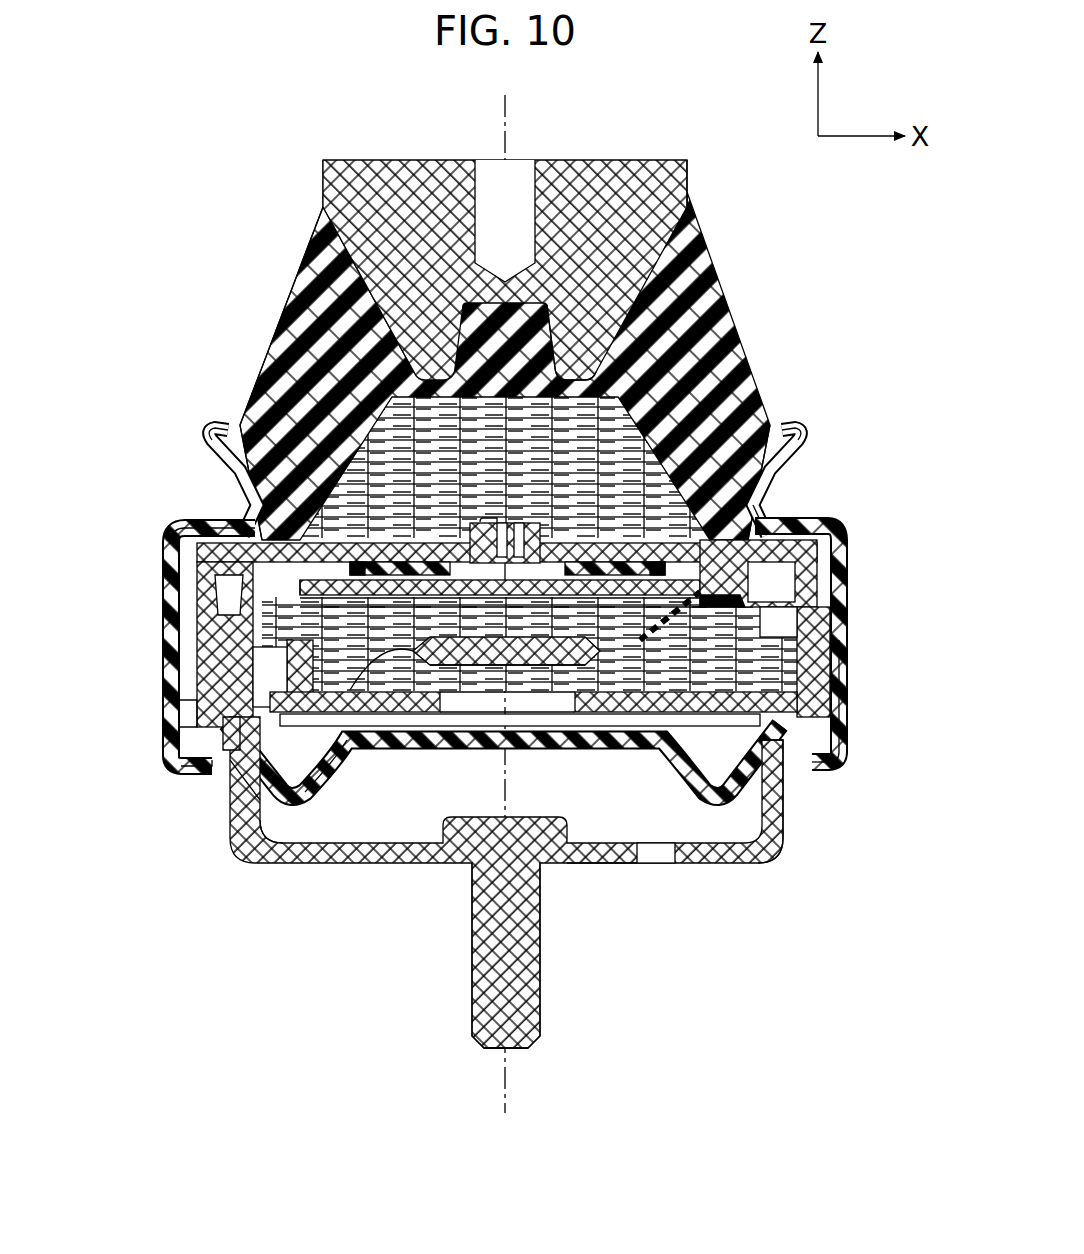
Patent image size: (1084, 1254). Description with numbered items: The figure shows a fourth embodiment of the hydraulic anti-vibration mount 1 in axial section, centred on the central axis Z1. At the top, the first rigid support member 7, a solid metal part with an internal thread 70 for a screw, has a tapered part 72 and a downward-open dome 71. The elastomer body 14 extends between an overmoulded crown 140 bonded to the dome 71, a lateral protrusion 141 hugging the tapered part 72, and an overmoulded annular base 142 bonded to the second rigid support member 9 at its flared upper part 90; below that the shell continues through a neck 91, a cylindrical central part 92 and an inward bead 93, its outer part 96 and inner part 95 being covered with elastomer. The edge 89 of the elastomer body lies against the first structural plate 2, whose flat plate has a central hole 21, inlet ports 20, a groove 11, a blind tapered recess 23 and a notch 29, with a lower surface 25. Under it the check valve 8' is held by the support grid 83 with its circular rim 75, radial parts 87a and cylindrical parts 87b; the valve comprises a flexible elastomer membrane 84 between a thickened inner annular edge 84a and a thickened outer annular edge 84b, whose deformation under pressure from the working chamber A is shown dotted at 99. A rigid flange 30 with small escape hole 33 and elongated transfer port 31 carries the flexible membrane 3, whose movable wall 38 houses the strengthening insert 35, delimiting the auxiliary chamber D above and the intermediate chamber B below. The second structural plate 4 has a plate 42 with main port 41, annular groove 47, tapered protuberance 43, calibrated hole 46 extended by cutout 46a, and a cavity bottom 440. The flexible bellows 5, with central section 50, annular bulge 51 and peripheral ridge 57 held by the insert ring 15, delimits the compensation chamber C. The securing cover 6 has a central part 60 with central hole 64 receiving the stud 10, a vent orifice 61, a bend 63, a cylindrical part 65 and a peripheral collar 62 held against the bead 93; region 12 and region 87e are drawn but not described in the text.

The hydraulic anti-vibration mount 1 is at (333, 92).
The first structural plate 2 is at (388, 542).
The flexible membrane 3 is at (378, 652).
The second structural plate 4 is at (702, 722).
The flexible bellows 5 is at (380, 758).
The securing cover 6 is at (762, 870).
The first rigid support member 7 is at (627, 172).
The check valve 8' is at (406, 511).
The second rigid support member 9 is at (245, 468).
The stud 10 is at (542, 1025).
The groove 11 is at (775, 577).
The cylindrical portion 12 is at (790, 633).
The elastomer body 14 is at (312, 352).
The insert ring 15 is at (237, 700).
The inlet ports 20 is at (560, 552).
The central hole 21 is at (528, 540).
The blind tapered recess 23 is at (178, 548).
The lower surface 25 is at (415, 566).
The notch 29 is at (232, 523).
The rigid flange 30 is at (745, 607).
The elongated transfer port 31 is at (785, 617).
The small escape hole 33 is at (212, 625).
The strengthening insert 35 is at (582, 652).
The movable wall 38 is at (375, 616).
The main port 41 is at (452, 705).
The plate 42 is at (335, 737).
The tapered protuberance 43 is at (198, 598).
The calibrated hole 46 is at (230, 645).
The cutout 46a is at (265, 673).
The annular groove 47 is at (200, 765).
The central section 50 is at (520, 750).
The annular bulge 51 is at (283, 845).
The peripheral ridge 57 is at (225, 770).
The central part 60 is at (586, 866).
The vent orifice 61 is at (662, 866).
The peripheral collar 62 is at (784, 765).
The bend 63 is at (768, 842).
The central hole 64 is at (470, 882).
The cylindrical part 65 is at (776, 808).
The internal thread 70 is at (527, 175).
The dome 71 is at (535, 290).
The tapered part 72 is at (650, 213).
The circular rim 75 is at (382, 565).
The support grid 83 is at (492, 540).
The flexible elastomer membrane 84 is at (590, 568).
The thickened inner annular edge 84a is at (450, 582).
The thickened outer annular edge 84b is at (637, 578).
The radial part 87a is at (765, 440).
The cylindrical part 87b is at (680, 580).
The rubber lower portion 87e is at (245, 800).
The edge 89 is at (297, 423).
The flared upper part 90 is at (800, 450).
The neck 91 is at (770, 507).
The cylindrical central part 92 is at (848, 688).
The bead 93 is at (838, 762).
The inner part 95 is at (847, 715).
The outer part 96 is at (848, 740).
The deformation of the outer edge 99 is at (205, 432).
The overmoulded crown 140 is at (382, 318).
The lateral protrusion 141 is at (325, 215).
The overmoulded annular base 142 is at (290, 442).
The bottom 440 is at (840, 660).
The central axis Z1 is at (500, 120).
The working chamber A is at (566, 449).
The intermediate chamber B is at (665, 674).
The compensation chamber C is at (700, 716).
The auxiliary chamber D is at (596, 626).